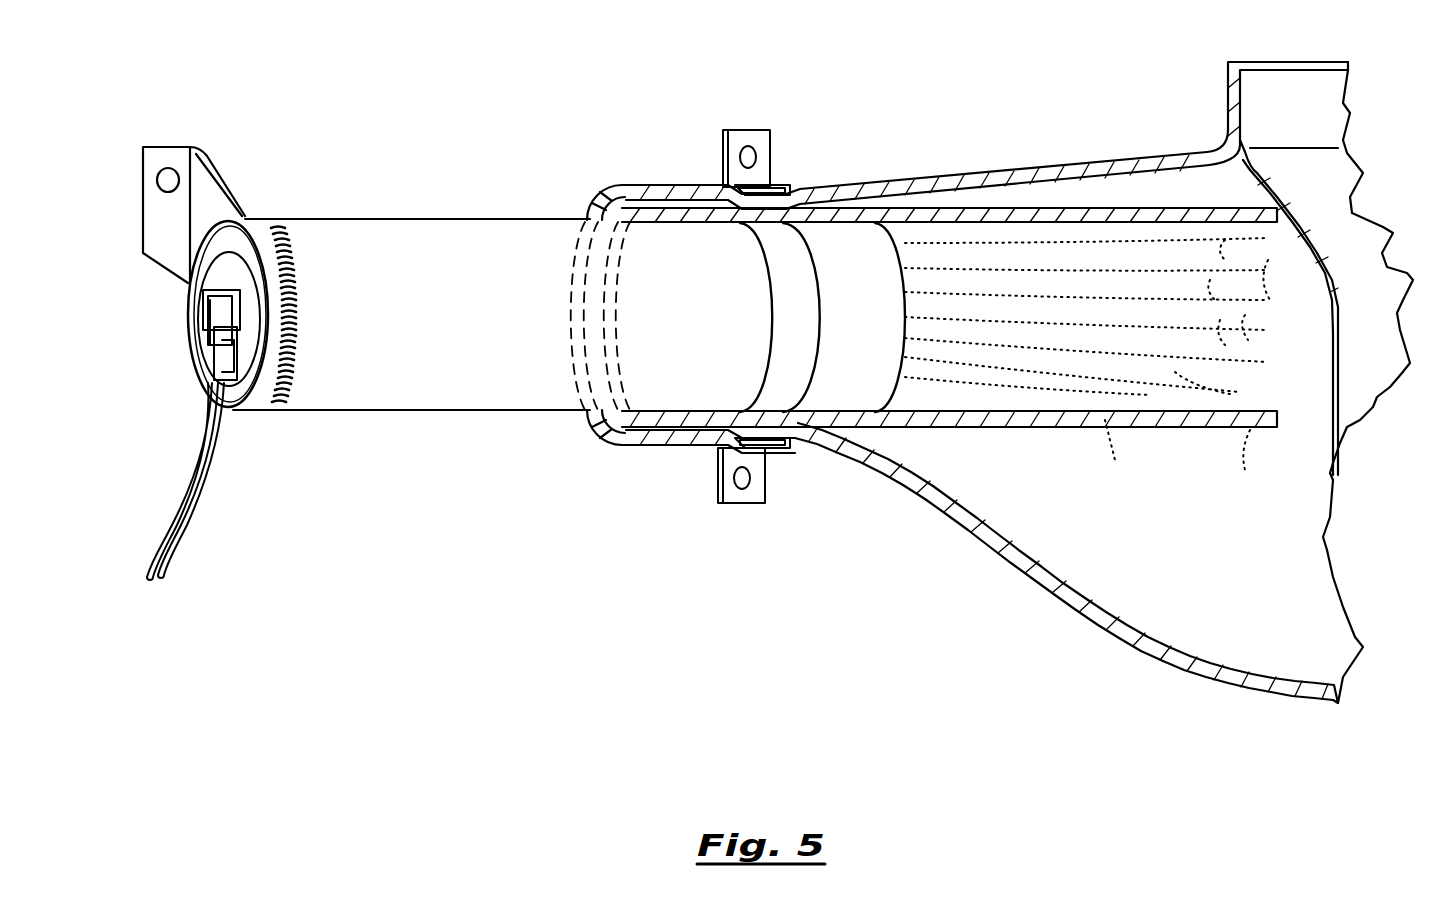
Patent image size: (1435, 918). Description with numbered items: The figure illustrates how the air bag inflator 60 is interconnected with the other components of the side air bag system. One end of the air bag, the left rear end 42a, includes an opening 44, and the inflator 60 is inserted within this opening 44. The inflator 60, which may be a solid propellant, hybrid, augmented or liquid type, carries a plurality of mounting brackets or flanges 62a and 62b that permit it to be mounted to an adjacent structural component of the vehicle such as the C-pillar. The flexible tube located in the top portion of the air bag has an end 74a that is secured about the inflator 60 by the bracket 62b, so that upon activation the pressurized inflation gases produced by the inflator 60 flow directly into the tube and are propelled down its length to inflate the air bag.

The left, rear end of air bag 42a is at (640, 183).
The opening 44 is at (603, 210).
The air bag inflator 60 is at (405, 250).
The mounting bracket 62a is at (205, 188).
The mounting bracket 62b is at (760, 172).
The end of tube 74a is at (690, 200).